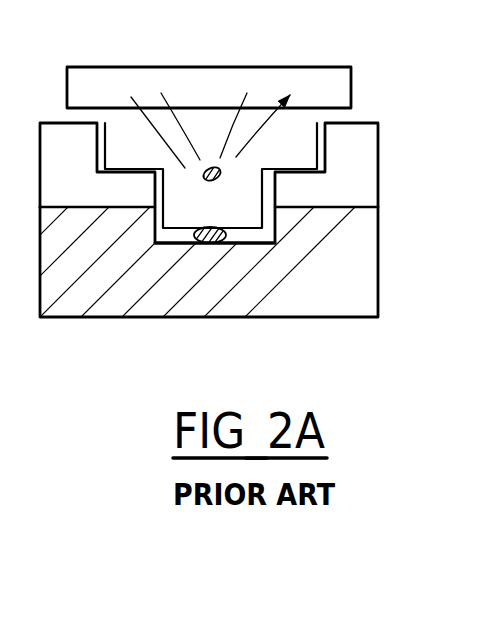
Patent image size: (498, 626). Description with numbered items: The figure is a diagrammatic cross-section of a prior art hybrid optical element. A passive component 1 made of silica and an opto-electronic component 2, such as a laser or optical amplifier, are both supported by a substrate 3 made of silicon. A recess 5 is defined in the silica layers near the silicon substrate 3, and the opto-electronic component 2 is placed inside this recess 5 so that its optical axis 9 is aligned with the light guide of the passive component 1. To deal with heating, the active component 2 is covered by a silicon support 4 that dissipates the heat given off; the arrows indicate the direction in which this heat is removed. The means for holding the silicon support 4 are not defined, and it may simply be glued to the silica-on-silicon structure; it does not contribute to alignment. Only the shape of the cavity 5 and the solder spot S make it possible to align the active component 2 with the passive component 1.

The passive component 1 is at (395, 115).
The opto-electronic component 2 is at (187, 207).
The substrate 3 is at (327, 292).
The silicon support 4 is at (311, 82).
The recess 5 is at (255, 251).
The optical axis 9 is at (204, 177).
The solder spot S is at (212, 245).